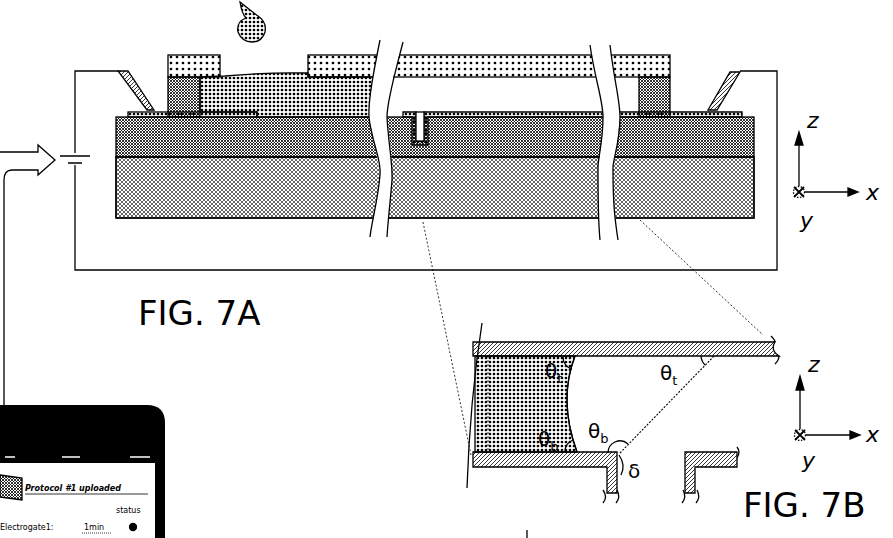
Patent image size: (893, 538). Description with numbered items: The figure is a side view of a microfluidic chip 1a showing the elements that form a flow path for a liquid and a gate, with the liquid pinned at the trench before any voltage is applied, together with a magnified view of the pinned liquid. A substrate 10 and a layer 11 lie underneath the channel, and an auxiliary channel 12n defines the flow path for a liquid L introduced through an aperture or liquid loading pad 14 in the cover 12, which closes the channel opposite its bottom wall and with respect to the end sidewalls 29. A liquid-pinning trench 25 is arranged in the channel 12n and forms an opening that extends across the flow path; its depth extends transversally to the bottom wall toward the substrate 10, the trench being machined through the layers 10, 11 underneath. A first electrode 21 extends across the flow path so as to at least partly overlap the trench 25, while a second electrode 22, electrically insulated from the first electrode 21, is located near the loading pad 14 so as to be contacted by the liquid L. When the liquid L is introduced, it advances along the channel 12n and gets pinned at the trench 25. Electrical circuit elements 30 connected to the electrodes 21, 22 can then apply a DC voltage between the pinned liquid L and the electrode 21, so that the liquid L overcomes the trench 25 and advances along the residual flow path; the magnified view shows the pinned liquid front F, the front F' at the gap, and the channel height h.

In FIG. 7A, the microfluidic chip 1a is at (521, 222).
In FIG. 7A, the substrate 10 is at (252, 219).
In FIG. 7A, the layer 11 is at (297, 158).
In FIG. 7A, the cover 12 is at (527, 55).
In FIG. 7B, the cover 12 is at (672, 343).
In FIG. 7A, the auxiliary channel 12n is at (632, 78).
In FIG. 7A, the liquid loading pad 14 is at (293, 53).
In FIG. 7A, the first electrode 21 is at (547, 112).
In FIG. 7B, the first electrode 21 is at (550, 469).
In FIG. 7A, the second electrode 22 is at (227, 112).
In FIG. 7A, the liquid-pinning trench 25 is at (426, 108).
In FIG. 7B, the liquid-pinning trench 25 is at (660, 462).
In FIG. 7A, the end sidewall 29 is at (167, 82).
In FIG. 7A, the electrical circuit elements 30 is at (73, 219).
In FIG. 7A, the liquid L is at (333, 93).
In FIG. 7B, the liquid L is at (517, 380).
In FIG. 7B, the liquid front F is at (593, 382).
In FIG. 7A, the liquid front at gap F' is at (449, 66).
In FIG. 7B, the liquid front at gap F' is at (681, 404).
In FIG. 7B, the channel height h is at (485, 404).